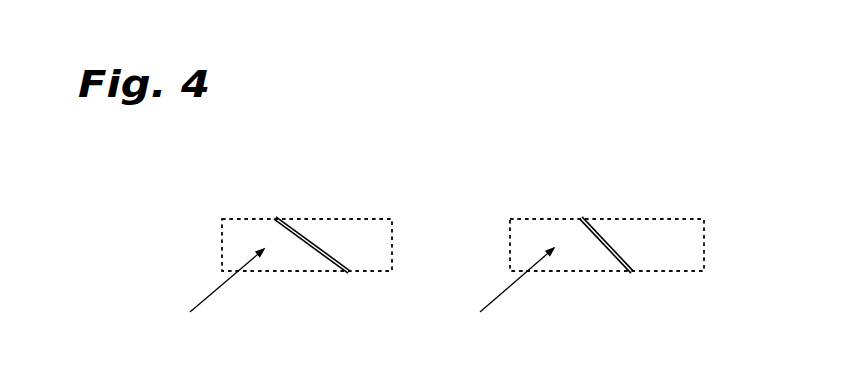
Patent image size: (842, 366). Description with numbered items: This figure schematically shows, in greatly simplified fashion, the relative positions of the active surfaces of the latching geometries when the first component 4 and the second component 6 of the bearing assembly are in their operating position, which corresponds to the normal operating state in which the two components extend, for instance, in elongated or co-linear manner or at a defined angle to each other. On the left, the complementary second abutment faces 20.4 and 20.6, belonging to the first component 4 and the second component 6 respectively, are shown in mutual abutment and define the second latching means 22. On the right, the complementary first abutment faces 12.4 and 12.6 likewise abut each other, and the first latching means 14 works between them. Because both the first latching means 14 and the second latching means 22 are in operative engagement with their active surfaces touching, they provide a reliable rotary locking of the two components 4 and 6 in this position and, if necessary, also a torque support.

The first component 4 is at (351, 260).
The second component 6 is at (235, 247).
The second abutment face 20.4 is at (314, 243).
The second abutment face 20.6 is at (325, 262).
The second latching means 22 is at (213, 296).
The first abutment face 12.4 is at (607, 240).
The first abutment face 12.6 is at (613, 260).
The first latching means 14 is at (503, 296).